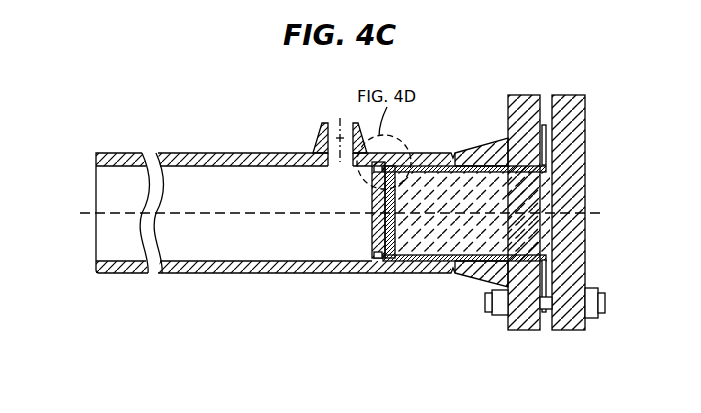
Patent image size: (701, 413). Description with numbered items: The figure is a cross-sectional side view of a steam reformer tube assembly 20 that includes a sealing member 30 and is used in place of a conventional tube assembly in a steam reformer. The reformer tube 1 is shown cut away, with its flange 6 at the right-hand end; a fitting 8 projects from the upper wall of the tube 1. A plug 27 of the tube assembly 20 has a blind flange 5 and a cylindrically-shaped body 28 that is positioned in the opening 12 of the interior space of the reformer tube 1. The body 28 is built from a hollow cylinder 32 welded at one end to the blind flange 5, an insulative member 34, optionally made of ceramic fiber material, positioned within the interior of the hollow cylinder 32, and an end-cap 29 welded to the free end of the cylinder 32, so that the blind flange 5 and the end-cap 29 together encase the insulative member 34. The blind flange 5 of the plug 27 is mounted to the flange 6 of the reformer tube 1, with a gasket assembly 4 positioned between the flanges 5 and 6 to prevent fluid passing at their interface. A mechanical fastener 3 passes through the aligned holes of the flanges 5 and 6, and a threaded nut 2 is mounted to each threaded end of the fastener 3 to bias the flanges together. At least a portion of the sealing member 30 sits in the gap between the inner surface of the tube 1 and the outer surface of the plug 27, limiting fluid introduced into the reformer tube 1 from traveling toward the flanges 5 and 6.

The reformer tube 1 is at (208, 153).
The threaded nut 2 is at (590, 289).
The mechanical fastener 3 is at (607, 303).
The gasket assembly 4 is at (564, 298).
The blind flange 5 is at (562, 95).
The flange 6 is at (521, 95).
The fitting 8 is at (321, 123).
The opening 12 is at (540, 196).
The steam reformer tube assembly 20 is at (211, 93).
The plug 27 is at (437, 241).
The cylindrically-shaped body 28 is at (505, 244).
The end-cap 29 is at (372, 235).
The sealing member 30 is at (372, 260).
The hollow cylinder 32 is at (405, 263).
The insulative member 34 is at (463, 243).